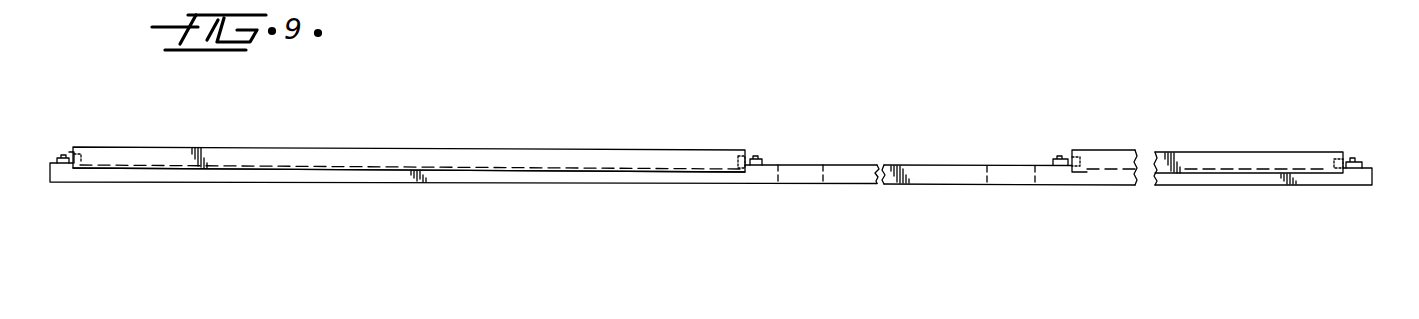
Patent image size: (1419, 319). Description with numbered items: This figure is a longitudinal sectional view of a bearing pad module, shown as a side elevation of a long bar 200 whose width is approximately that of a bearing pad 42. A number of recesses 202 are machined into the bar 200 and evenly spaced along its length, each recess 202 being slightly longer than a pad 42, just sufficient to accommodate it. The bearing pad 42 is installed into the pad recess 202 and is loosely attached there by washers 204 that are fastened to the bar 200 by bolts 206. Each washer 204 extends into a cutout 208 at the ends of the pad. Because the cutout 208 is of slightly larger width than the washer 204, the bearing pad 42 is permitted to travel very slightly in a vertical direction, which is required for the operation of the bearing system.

The bearing pad 42 is at (368, 130).
The bar 200 is at (807, 176).
The recess 202 is at (1305, 175).
The washer 204 is at (60, 157).
The bolt 206 is at (72, 160).
The cutout 208 is at (82, 174).